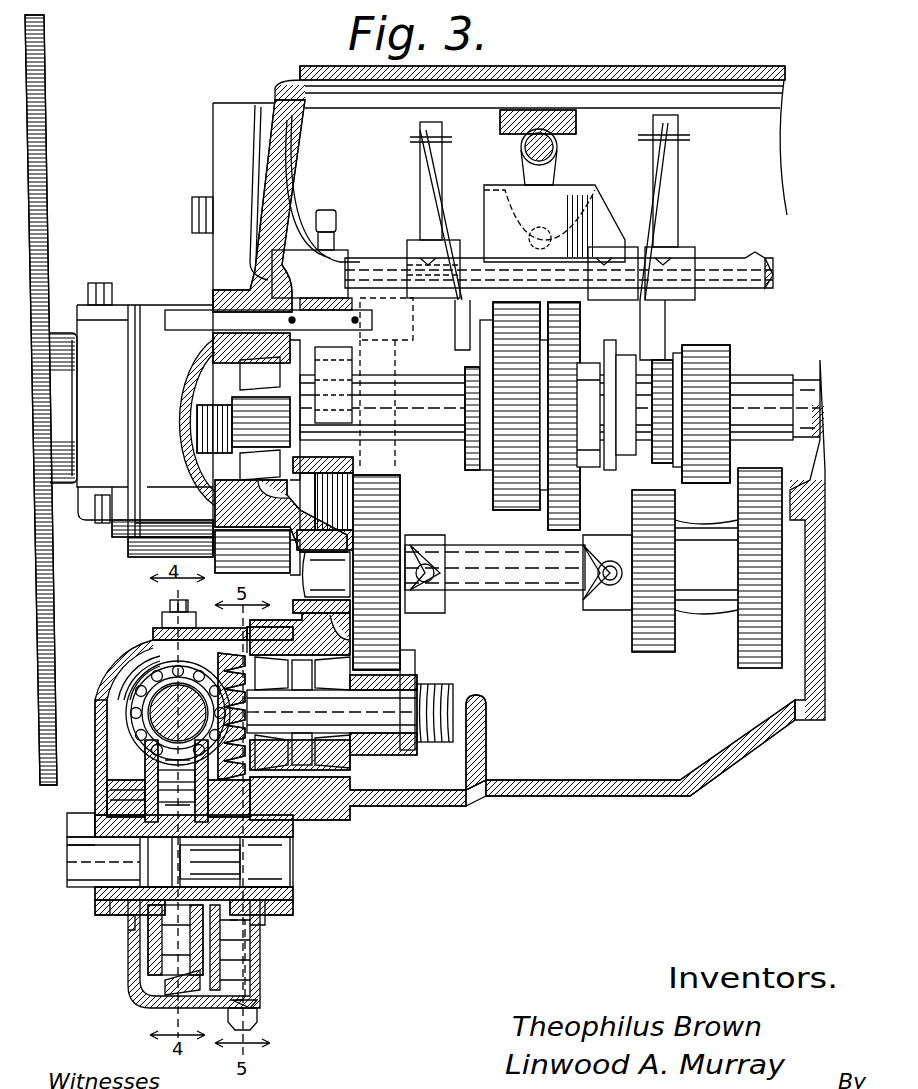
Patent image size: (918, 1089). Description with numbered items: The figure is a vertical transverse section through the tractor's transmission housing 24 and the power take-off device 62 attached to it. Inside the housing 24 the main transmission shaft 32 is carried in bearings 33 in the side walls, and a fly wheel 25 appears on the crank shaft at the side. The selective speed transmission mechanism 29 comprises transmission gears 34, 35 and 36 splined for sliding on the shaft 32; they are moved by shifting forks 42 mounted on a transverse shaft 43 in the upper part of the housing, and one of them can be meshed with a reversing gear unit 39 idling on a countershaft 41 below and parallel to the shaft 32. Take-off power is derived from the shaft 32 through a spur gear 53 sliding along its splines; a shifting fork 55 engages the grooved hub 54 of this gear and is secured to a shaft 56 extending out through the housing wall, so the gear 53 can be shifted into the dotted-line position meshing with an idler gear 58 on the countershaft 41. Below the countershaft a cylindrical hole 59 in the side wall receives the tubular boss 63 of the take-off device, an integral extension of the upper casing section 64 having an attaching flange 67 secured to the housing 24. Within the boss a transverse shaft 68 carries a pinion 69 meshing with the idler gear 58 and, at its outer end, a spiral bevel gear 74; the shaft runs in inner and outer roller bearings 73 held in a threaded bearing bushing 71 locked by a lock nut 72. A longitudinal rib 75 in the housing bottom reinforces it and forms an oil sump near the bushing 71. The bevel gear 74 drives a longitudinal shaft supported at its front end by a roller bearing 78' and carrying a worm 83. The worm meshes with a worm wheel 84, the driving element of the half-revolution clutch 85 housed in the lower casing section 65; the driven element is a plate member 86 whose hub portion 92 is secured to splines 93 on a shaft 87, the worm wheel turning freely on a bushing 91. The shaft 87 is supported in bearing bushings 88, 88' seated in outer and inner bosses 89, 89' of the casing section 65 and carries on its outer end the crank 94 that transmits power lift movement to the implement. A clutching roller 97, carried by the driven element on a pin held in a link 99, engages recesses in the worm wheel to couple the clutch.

The housing 24 is at (262, 190).
The fly wheel 25 is at (48, 135).
The selective speed transmission mechanism 29 is at (695, 338).
The transverse shaft 32 is at (790, 375).
The bearings 33 is at (252, 412).
The transmission gear 34 is at (493, 500).
The transmission gear 35 is at (590, 488).
The transmission gear 36 is at (660, 466).
The reversing gear unit 39 is at (738, 646).
The countershaft 41 is at (580, 590).
The shifting forks 42 is at (418, 240).
The transverse shaft 43 is at (770, 280).
The spur gear 53 is at (338, 385).
The grooved hub 54 is at (372, 470).
The shifting fork 55 is at (318, 377).
The shaft 56 is at (185, 310).
The idler gear 58 is at (400, 508).
The cylindrical hole 59 is at (400, 632).
The power take-off device 62 is at (112, 648).
The tubular boss portion 63 is at (345, 795).
The upper casing section 64 is at (105, 705).
The lower casing section 65 is at (132, 972).
The attaching flange 67 is at (283, 628).
The transverse shaft 68 is at (420, 712).
The pinion 69 is at (400, 660).
The bearing bushing 71 is at (415, 665).
The lock nut 72 is at (400, 792).
The roller bearings 73 is at (290, 745).
The spiral bevel gear 74 is at (238, 632).
The longitudinal rib 75 is at (488, 735).
The roller bearing 78' is at (152, 637).
The worm 83 is at (135, 700).
The worm wheel 84 is at (168, 985).
The half revolution clutch 85 is at (143, 945).
The plate member 86 is at (225, 966).
The shaft 87 is at (100, 860).
The bearing bushing 88 is at (106, 931).
The bearing bushing 88' is at (277, 917).
The outer boss 89 is at (79, 917).
The inner boss 89' is at (312, 912).
The bushing 91 is at (158, 887).
The hub portion 92 is at (250, 938).
The splines 93 is at (235, 860).
The crank 94 is at (70, 822).
The clutching roller 97 is at (165, 772).
The link 99 is at (160, 800).